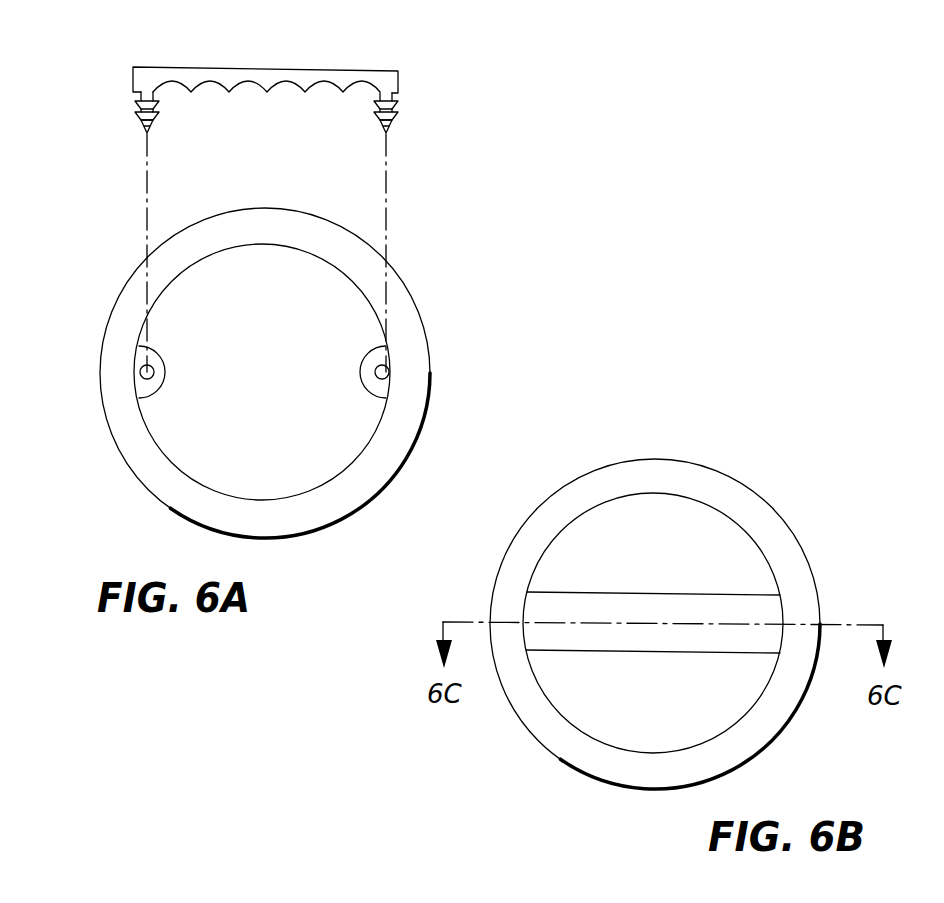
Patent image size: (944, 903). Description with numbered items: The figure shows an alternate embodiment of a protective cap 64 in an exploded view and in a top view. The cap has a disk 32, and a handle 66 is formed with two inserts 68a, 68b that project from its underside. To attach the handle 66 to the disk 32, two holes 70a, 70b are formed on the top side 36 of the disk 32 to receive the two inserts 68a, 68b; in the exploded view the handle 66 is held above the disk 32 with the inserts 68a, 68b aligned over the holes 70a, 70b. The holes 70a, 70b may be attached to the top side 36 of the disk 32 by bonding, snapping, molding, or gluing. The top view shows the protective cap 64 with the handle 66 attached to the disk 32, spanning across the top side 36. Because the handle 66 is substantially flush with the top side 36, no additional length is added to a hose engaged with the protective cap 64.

In FIG. 6A, the disk 32 is at (429, 384).
In FIG. 6B, the disk 32 is at (768, 722).
In FIG. 6A, the top side 36 is at (120, 423).
In FIG. 6A, the protective cap 64 is at (478, 239).
In FIG. 6B, the protective cap 64 is at (815, 510).
In FIG. 6A, the handle 66 is at (247, 67).
In FIG. 6B, the handle 66 is at (651, 592).
In FIG. 6A, the insert 68a is at (135, 107).
In FIG. 6A, the insert 68b is at (399, 111).
In FIG. 6A, the hole 70a is at (152, 370).
In FIG. 6A, the hole 70b is at (377, 369).